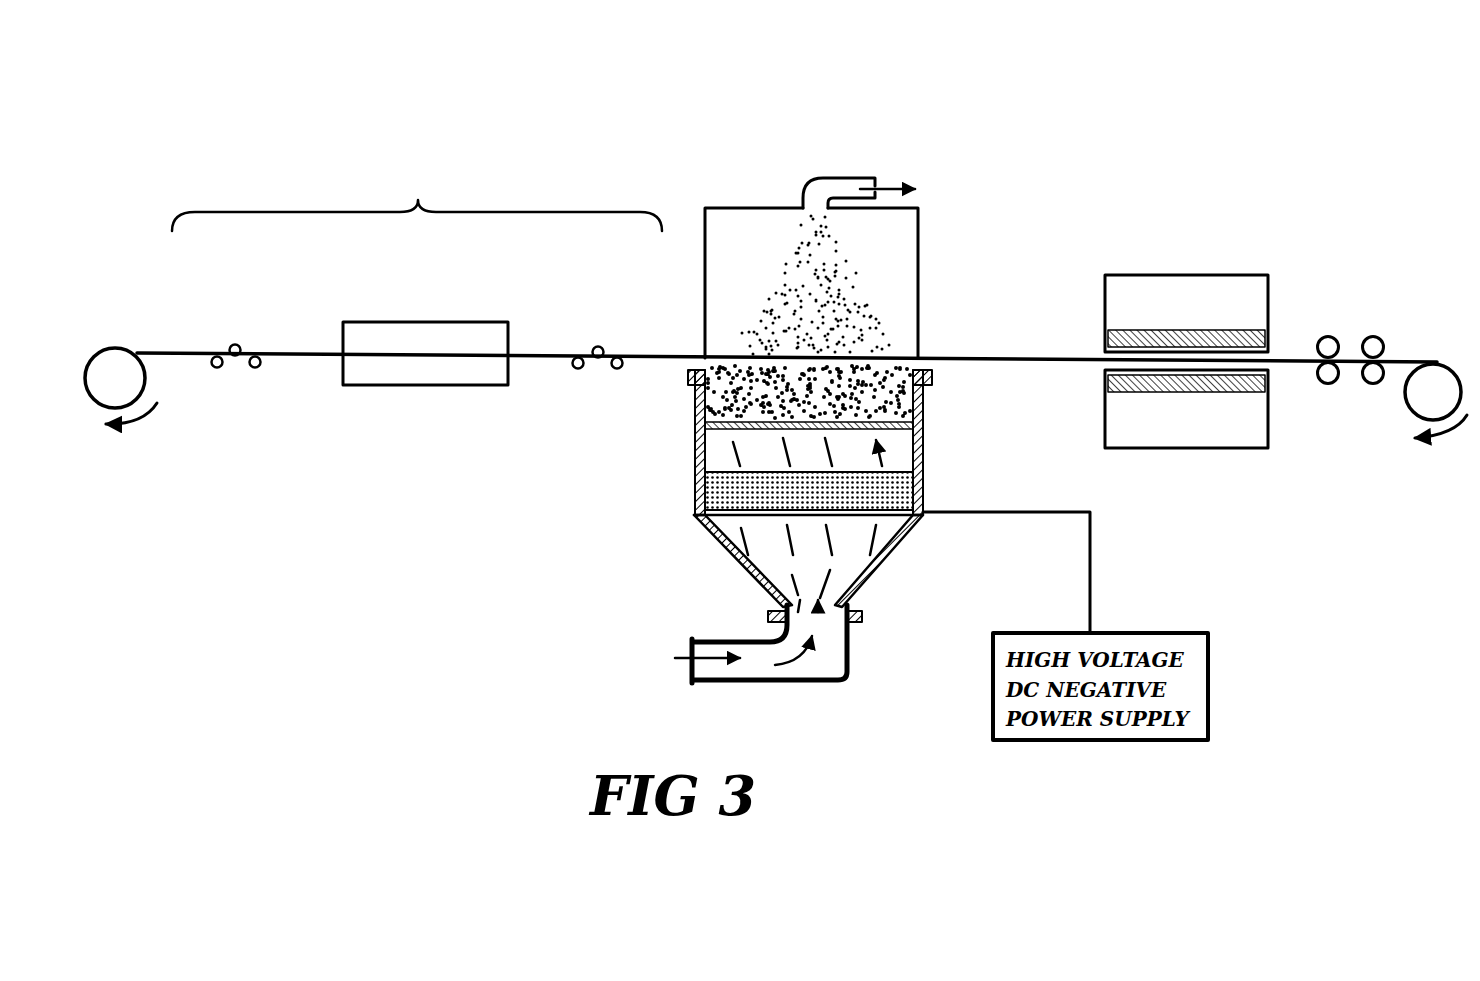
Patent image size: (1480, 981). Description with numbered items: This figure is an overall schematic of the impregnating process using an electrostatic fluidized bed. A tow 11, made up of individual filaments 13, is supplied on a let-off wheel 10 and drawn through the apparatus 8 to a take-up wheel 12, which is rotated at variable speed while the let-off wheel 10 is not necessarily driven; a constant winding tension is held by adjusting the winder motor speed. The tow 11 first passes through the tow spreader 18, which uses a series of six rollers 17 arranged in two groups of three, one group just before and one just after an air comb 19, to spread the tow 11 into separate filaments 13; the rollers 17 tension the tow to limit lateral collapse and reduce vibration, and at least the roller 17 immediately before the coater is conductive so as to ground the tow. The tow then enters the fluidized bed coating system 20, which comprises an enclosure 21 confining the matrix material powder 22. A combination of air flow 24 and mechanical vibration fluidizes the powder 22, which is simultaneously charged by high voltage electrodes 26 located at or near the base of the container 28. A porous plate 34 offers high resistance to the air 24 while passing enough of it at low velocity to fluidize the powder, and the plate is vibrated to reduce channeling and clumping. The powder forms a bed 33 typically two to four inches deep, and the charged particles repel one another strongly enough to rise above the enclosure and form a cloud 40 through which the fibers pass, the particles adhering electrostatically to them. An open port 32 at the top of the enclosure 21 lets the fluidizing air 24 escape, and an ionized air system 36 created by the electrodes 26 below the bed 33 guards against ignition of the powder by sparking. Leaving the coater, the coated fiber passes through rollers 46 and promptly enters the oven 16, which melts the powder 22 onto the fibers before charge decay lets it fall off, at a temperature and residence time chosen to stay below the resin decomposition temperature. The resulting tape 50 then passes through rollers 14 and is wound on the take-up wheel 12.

The apparatus 8 is at (315, 78).
The let-off wheel 10 is at (113, 365).
The tow 11 is at (160, 344).
The take-up wheel 12 is at (1440, 372).
The filaments 13 is at (313, 351).
The nip rollers 14 is at (1373, 385).
The oven 16 is at (1195, 274).
The rollers 17 is at (233, 345).
The tow spreader 18 is at (417, 202).
The air comb 19 is at (458, 386).
The fluidized bed coating system 20 is at (825, 122).
The enclosure 21 is at (680, 402).
The matrix material powder 22 is at (918, 400).
The air flow 24 is at (766, 565).
The high voltage electrodes 26 is at (916, 492).
The container 28 is at (882, 558).
The open port 32 is at (878, 180).
The bed 33 is at (755, 405).
The porous plate 34 is at (718, 450).
The ionized air system 36 is at (903, 463).
The cloud 40 is at (903, 283).
The roller 46 is at (1333, 337).
The tape 50 is at (1408, 358).